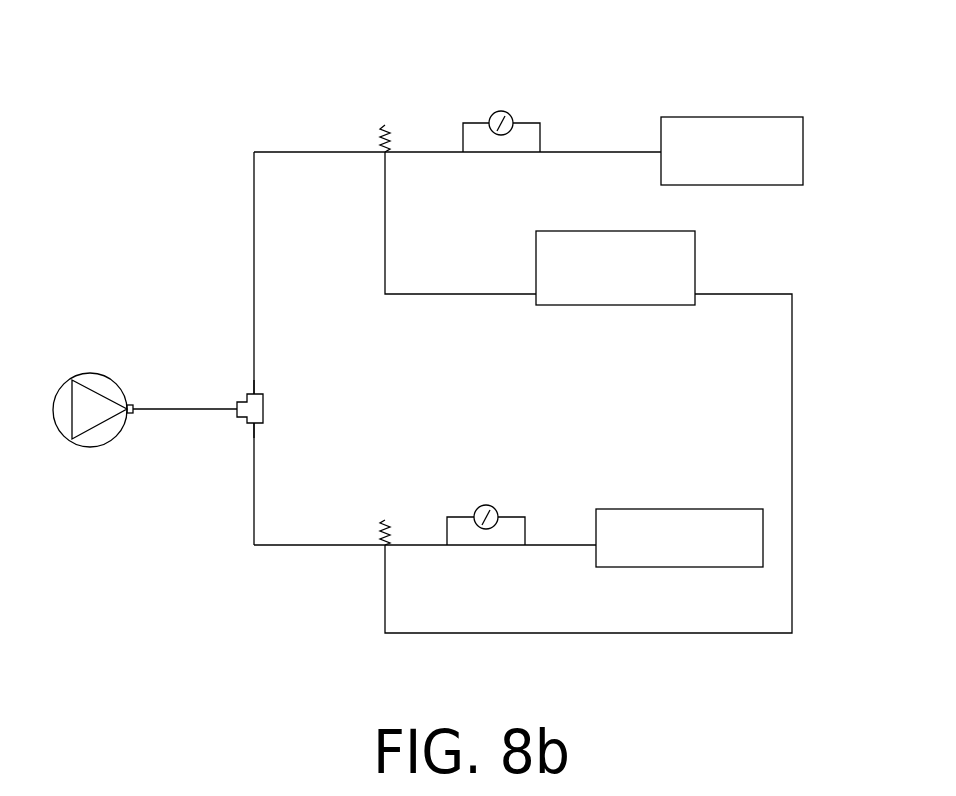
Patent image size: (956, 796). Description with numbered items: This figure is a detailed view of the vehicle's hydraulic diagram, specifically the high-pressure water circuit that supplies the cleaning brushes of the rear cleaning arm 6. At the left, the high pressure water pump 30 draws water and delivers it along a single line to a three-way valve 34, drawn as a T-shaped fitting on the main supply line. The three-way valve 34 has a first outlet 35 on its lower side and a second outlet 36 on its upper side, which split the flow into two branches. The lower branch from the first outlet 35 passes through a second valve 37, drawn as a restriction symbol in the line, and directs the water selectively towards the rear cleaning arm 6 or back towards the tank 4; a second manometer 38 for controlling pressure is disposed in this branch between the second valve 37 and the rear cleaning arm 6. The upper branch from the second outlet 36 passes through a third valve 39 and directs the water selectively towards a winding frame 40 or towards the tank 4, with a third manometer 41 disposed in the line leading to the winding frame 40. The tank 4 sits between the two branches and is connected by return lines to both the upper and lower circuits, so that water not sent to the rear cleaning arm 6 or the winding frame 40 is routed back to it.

The tank 4 is at (618, 282).
The rear cleaning arm 6 is at (670, 530).
The high pressure water pump 30 is at (97, 380).
The three-way valve 34 is at (266, 407).
The first outlet 35 is at (260, 425).
The second outlet 36 is at (257, 393).
The second valve 37 is at (386, 528).
The second manometer 38 is at (494, 516).
The third valve 39 is at (386, 130).
The winding frame 40 is at (718, 140).
The third manometer 41 is at (507, 117).